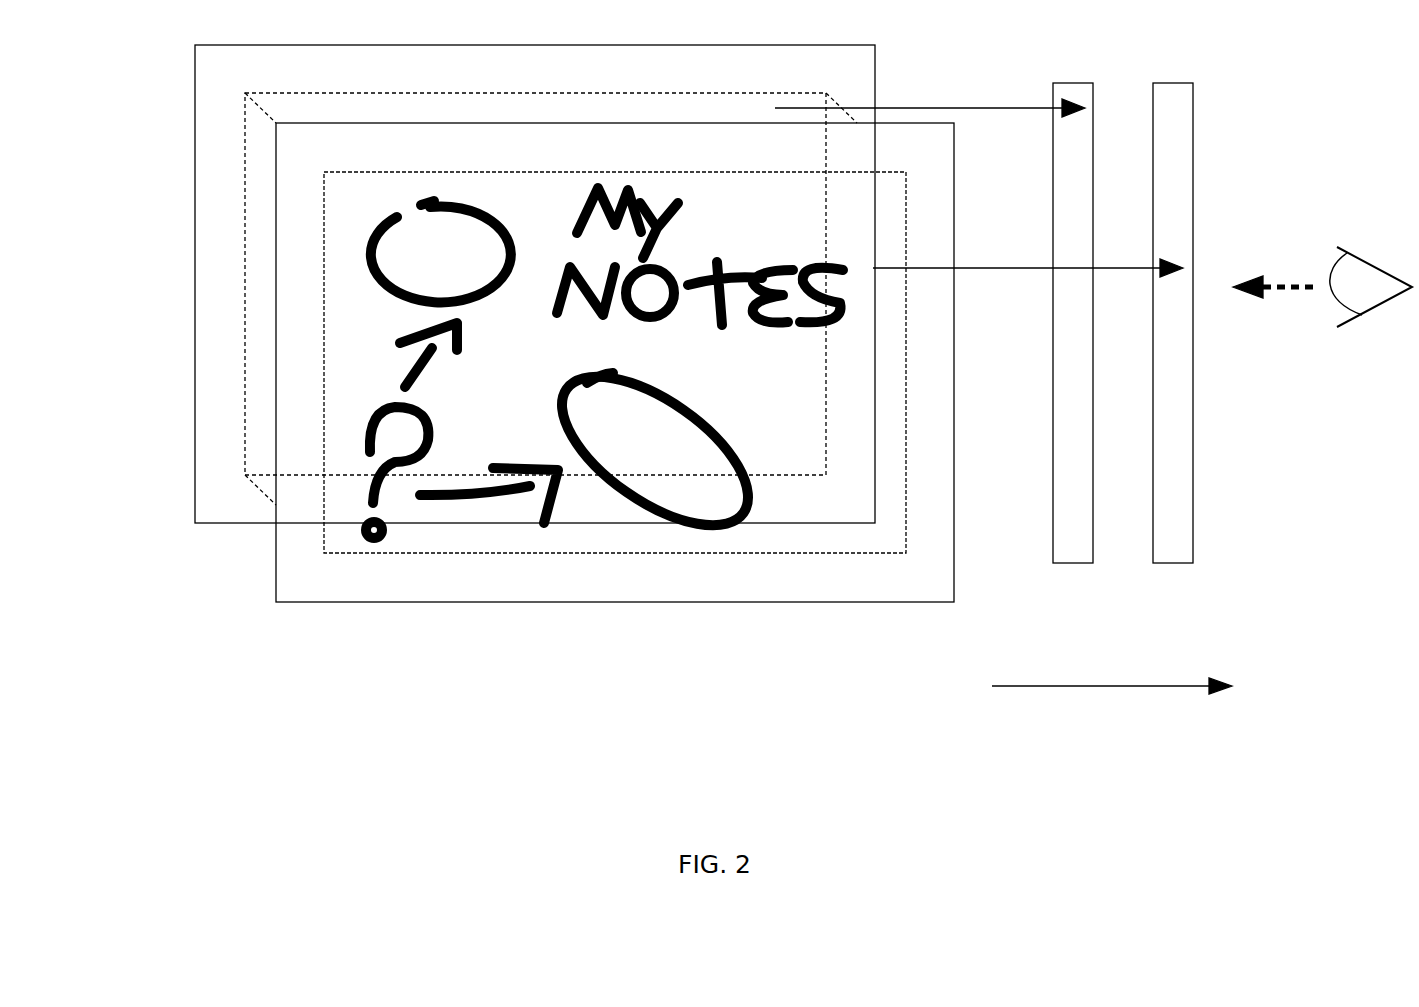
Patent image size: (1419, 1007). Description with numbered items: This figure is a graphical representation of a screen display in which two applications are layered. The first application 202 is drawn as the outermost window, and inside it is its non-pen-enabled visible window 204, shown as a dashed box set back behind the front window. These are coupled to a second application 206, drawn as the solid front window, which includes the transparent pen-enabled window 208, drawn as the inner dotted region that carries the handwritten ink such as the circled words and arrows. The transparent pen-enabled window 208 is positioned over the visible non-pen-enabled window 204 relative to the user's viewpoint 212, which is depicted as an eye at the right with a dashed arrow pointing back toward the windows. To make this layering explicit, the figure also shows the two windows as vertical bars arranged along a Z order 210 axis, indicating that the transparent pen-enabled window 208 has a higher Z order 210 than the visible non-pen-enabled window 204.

The first application 202 is at (210, 105).
The non-pen-enabled visible window 204 is at (255, 177).
The second application 206 is at (297, 255).
The transparent pen-enabled window 208 is at (365, 325).
The Z order 210 is at (1067, 722).
The user's viewpoint 212 is at (1377, 297).